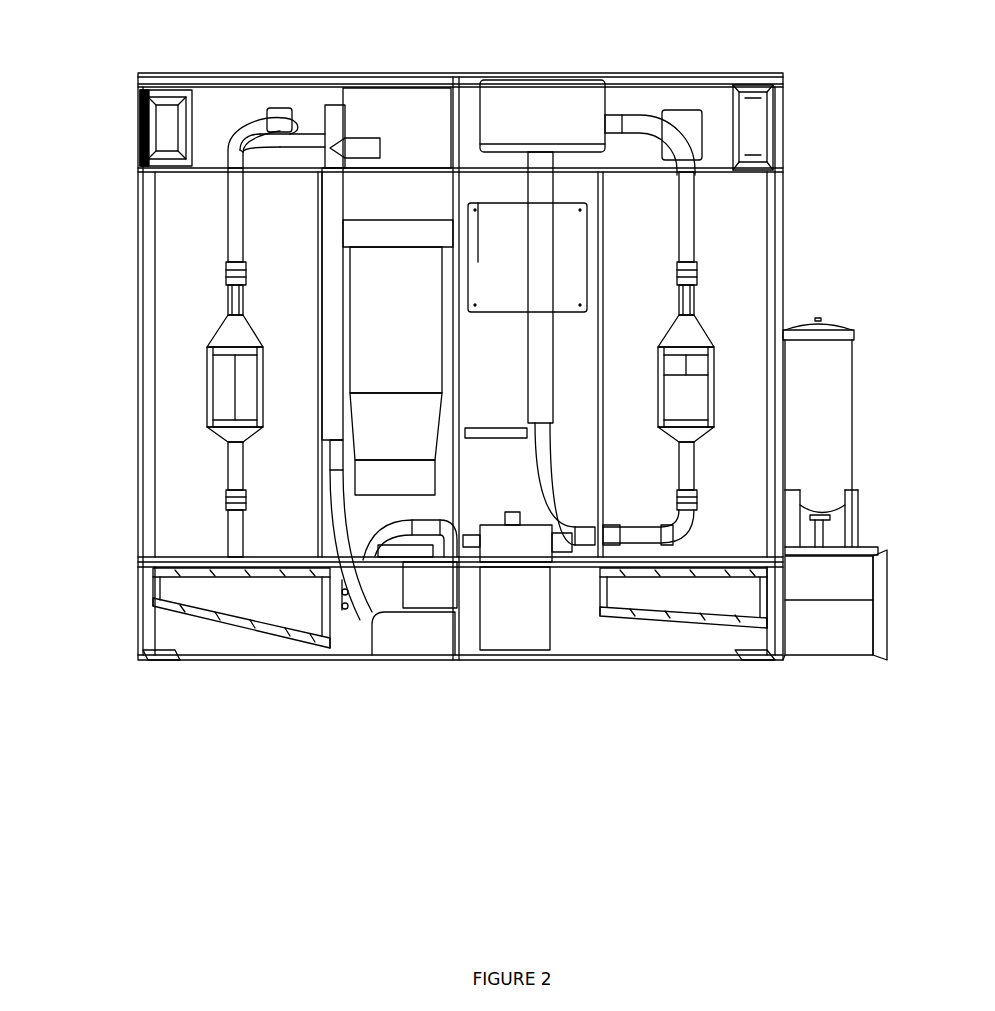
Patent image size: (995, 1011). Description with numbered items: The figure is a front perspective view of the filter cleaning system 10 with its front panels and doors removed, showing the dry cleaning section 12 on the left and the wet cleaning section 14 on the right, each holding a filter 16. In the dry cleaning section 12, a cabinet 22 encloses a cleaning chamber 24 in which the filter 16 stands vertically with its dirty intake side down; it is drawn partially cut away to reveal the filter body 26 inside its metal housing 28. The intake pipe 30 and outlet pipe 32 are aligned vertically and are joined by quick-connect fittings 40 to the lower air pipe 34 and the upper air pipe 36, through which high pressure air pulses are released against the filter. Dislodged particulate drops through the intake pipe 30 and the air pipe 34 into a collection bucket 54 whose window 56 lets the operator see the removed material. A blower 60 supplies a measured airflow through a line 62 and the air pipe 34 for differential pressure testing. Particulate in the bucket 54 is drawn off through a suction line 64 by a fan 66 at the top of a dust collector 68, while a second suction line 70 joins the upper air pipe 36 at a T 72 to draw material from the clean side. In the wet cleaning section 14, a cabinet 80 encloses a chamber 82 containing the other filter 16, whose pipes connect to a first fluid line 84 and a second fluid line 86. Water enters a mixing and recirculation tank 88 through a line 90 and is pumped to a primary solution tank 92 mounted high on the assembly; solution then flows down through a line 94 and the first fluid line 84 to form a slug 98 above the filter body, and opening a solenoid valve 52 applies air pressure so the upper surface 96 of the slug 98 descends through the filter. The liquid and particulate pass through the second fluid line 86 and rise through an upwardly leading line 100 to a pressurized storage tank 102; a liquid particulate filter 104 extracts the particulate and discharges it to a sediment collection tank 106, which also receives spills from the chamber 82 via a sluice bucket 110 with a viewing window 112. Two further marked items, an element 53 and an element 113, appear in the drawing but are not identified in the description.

The filter cleaning system 10 is at (407, 334).
The dry cleaning section 12 is at (254, 368).
The wet cleaning section 14 is at (817, 371).
The filter 16 is at (469, 359).
The cabinet 22 is at (102, 413).
The cleaning chamber 24 is at (294, 364).
The filter body 26 is at (460, 379).
The metal housing 28 is at (436, 387).
The intake pipe 30 is at (465, 466).
The outlet pipe 32 is at (492, 295).
The air pipe 34 is at (257, 533).
The air pipe 36 is at (206, 215).
The quick-connect fitting 40 is at (432, 382).
The solenoid valve 52 is at (658, 135).
The flow direction 53 is at (265, 69).
The collection bucket 54 is at (236, 629).
The window 56 is at (232, 644).
The blower 60 is at (395, 626).
The line 62 is at (393, 545).
The suction line 64 is at (364, 319).
The fan 66 is at (397, 128).
The dust collector 68 is at (398, 357).
The suction line 70 is at (346, 104).
The T 72 is at (246, 104).
The cabinet 80 is at (813, 408).
The chamber 82 is at (622, 364).
The first fluid line 84 is at (717, 217).
The second fluid line 86 is at (674, 527).
The mixing and recirculation tank 88 is at (526, 581).
The line 90 is at (493, 517).
The primary solution tank 92 is at (542, 116).
The line 94 is at (663, 107).
The upper surface 96 is at (710, 363).
The slug 98 is at (710, 407).
The upwardly leading line 100 is at (534, 348).
The pressurized storage tank 102 is at (526, 320).
The liquid particulate filter 104 is at (852, 436).
The sediment collection tank 106 is at (869, 605).
The sluice bucket 110 is at (687, 630).
The viewing window 112 is at (654, 646).
The door panel 113 is at (809, 126).